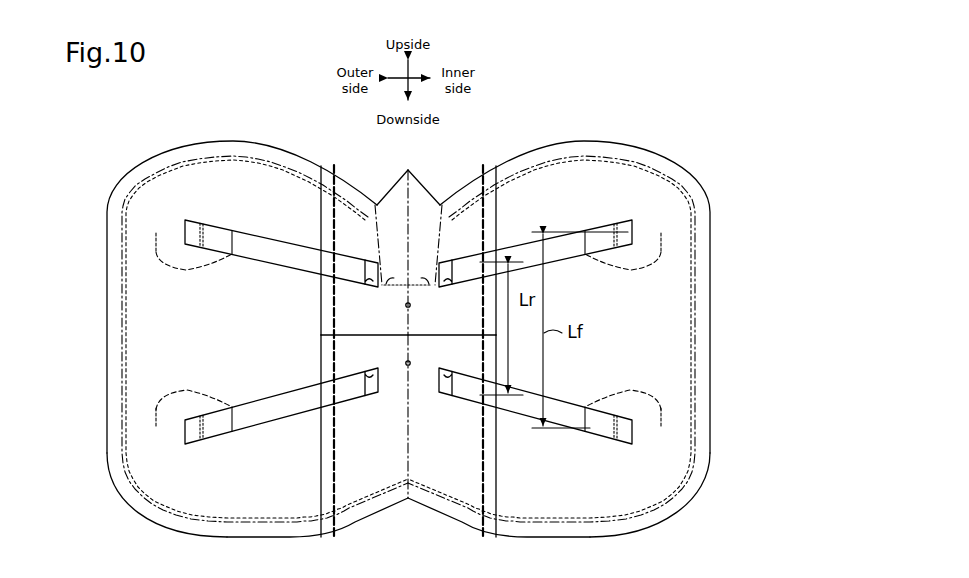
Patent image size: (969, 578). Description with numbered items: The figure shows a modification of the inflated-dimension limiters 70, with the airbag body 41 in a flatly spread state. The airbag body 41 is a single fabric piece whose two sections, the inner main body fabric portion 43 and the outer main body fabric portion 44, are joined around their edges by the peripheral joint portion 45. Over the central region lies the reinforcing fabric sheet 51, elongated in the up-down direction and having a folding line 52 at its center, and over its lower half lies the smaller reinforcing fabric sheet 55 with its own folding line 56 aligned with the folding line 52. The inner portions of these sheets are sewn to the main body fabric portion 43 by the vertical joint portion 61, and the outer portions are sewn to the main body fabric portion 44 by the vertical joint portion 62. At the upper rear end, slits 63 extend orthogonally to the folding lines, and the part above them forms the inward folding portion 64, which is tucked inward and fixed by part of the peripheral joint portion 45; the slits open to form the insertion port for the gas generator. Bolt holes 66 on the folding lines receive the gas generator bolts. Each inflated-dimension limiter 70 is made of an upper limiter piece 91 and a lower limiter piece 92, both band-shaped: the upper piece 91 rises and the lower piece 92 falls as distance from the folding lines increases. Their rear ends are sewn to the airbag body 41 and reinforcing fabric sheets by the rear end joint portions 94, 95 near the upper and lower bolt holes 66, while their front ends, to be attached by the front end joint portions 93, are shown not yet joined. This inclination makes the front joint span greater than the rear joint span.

The airbag body 41 is at (408, 312).
The main body fabric portion 43 is at (547, 146).
The main body fabric portion 44 is at (311, 161).
The peripheral joint portion 45 is at (172, 181).
The reinforcing fabric sheet 51 is at (320, 218).
The folding line 52 is at (401, 197).
The reinforcing fabric sheet 55 is at (321, 357).
The folding line 56 is at (407, 432).
The vertical joint portion 61 is at (483, 485).
The vertical joint portion 62 is at (334, 485).
The slit 63 is at (403, 282).
The inward folding portion 64 is at (438, 178).
The bolt hole 66 is at (407, 366).
The inflated-dimension limiter 70 is at (418, 326).
The upper limiter piece 91 is at (247, 258).
The lower limiter piece 92 is at (240, 430).
The front end joint portion 93 is at (408, 331).
The rear end joint portion 94 is at (378, 291).
The rear end joint portion 95 is at (368, 368).